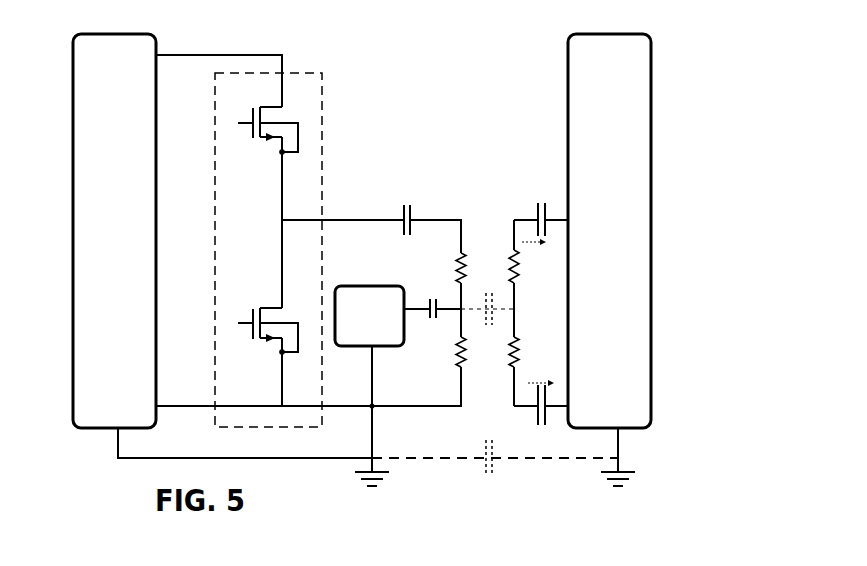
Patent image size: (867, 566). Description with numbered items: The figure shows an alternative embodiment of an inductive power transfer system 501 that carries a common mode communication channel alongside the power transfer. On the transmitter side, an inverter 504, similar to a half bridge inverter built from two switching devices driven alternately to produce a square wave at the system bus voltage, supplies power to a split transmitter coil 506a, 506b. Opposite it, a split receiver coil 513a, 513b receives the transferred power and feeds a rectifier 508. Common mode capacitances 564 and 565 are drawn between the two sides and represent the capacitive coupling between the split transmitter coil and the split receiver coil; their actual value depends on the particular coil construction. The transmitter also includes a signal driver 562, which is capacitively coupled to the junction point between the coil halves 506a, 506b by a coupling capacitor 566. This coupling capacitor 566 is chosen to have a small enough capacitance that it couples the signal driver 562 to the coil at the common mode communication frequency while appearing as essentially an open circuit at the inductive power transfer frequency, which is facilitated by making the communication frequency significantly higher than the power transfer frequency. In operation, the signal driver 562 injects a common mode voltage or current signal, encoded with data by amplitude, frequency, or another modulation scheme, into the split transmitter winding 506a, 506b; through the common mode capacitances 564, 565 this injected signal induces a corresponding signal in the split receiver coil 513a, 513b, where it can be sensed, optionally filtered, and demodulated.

The IPT system 501 is at (420, 70).
The inverter 504 is at (295, 73).
The rectifier 508 is at (630, 34).
The signal driver 562 is at (366, 285).
The common mode capacitance 564 is at (488, 290).
The common mode capacitance 565 is at (484, 446).
The coupling capacitor 566 is at (435, 297).
The split transmitter coil 506a is at (458, 258).
The split transmitter coil 506b is at (458, 360).
The split receiver coil 513a is at (519, 277).
The split receiver coil 513b is at (519, 343).